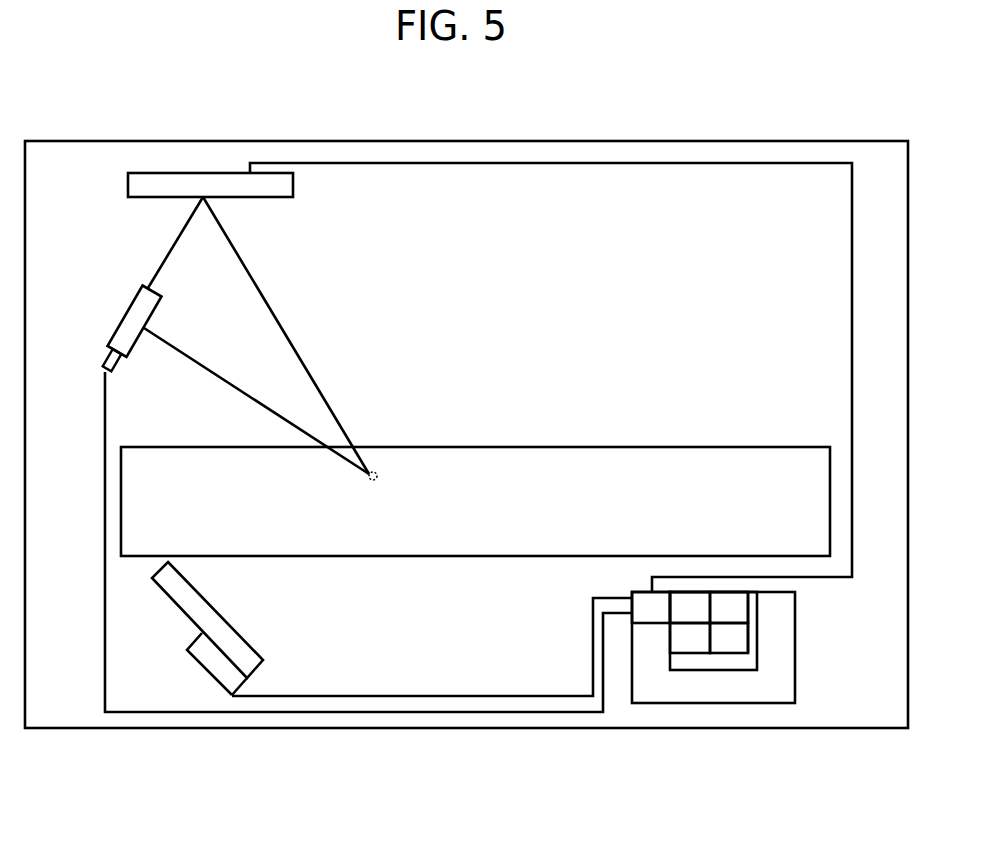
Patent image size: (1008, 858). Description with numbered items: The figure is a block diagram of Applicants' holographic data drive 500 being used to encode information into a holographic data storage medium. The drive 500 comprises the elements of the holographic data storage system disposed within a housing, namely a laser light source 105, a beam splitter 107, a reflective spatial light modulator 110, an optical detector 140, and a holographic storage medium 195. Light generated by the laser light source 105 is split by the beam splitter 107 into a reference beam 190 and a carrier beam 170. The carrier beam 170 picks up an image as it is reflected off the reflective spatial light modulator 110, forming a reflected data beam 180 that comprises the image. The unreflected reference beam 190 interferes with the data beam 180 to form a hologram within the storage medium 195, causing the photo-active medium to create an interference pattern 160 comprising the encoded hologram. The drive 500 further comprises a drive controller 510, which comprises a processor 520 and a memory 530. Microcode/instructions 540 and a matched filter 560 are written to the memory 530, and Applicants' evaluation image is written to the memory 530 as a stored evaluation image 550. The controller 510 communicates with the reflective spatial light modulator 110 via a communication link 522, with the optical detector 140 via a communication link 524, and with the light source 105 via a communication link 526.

The holographic data drive 500 is at (465, 736).
The drive controller 510 is at (773, 706).
The processor 520 is at (668, 618).
The communication link 522 is at (853, 240).
The communication link 524 is at (398, 696).
The communication link 526 is at (105, 462).
The memory 530 is at (763, 631).
The microcode/instructions 540 is at (745, 618).
The stored evaluation image 550 is at (745, 650).
The matched filter 560 is at (705, 650).
The reflective spatial light modulator 110 is at (293, 185).
The beam splitter 107 is at (143, 305).
The laser light source 105 is at (113, 372).
The carrier beam 170 is at (172, 258).
The reflected data beam 180 is at (303, 357).
The reference beam 190 is at (228, 378).
The interference pattern 160 is at (377, 468).
The holographic storage medium 195 is at (620, 443).
The optical detector 140 is at (252, 640).